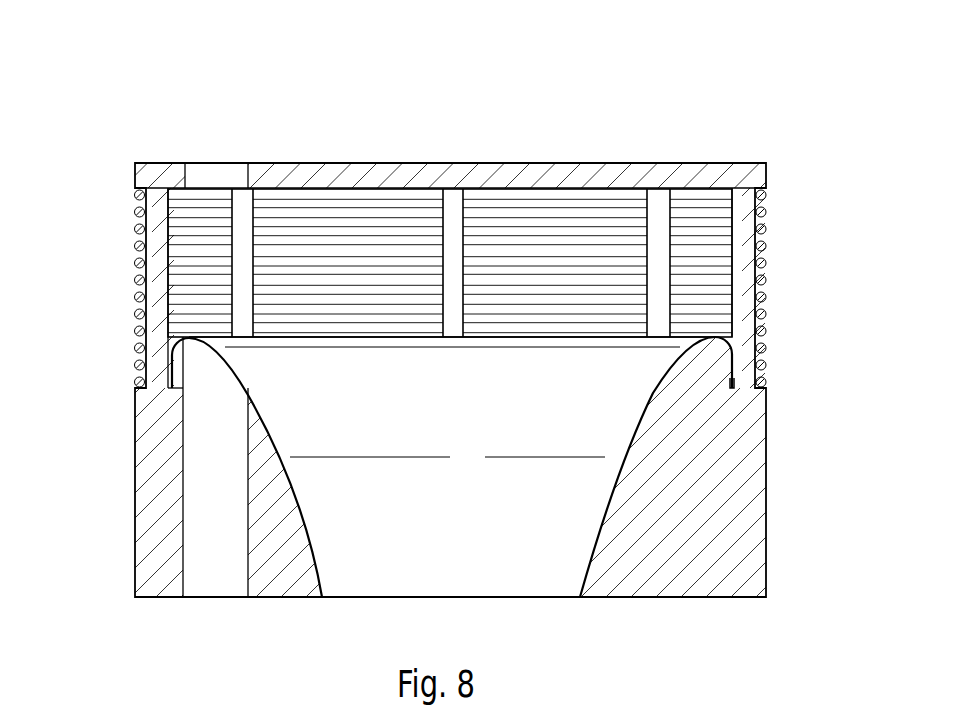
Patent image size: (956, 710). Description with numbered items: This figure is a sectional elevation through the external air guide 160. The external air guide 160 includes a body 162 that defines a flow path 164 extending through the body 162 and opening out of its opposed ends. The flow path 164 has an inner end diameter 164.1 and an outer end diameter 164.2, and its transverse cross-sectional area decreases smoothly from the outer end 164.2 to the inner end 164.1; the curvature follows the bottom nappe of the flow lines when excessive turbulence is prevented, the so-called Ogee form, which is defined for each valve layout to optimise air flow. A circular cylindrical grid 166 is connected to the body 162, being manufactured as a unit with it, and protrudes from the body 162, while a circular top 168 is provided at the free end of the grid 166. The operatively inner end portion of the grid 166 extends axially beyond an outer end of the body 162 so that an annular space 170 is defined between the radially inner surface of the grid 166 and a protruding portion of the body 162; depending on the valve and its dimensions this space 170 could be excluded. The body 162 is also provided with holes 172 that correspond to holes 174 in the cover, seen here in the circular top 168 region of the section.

The external air guide 160 is at (112, 98).
The body 162 is at (135, 463).
The flow path 164 is at (350, 570).
The inner end diameter 164.1 is at (543, 598).
The outer end diameter 164.2 is at (522, 337).
The circular cylindrical grid 166 is at (767, 263).
The circular top 168 is at (490, 162).
The annular space 170 is at (738, 380).
The holes 172 is at (215, 573).
The holes 174 is at (207, 178).